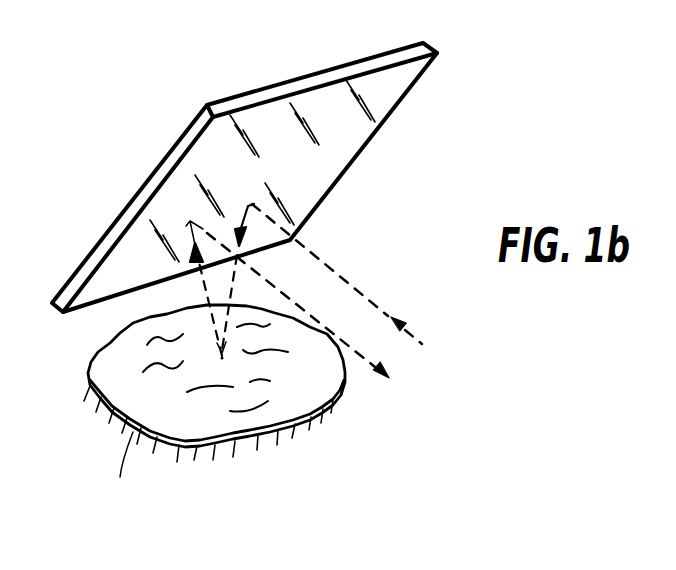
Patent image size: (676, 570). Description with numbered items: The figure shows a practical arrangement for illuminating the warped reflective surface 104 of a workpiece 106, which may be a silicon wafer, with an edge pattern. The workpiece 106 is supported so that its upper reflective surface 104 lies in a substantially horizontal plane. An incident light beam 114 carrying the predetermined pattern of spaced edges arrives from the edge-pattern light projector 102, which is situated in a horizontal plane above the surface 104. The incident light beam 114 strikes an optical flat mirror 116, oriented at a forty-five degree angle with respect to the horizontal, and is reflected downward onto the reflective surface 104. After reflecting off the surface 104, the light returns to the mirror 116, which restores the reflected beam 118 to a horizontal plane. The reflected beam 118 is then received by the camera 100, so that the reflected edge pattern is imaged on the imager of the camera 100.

The camera 100 is at (415, 379).
The edge-pattern light projector 102 is at (453, 338).
The reflective surface 104 is at (120, 353).
The workpiece 106 is at (342, 397).
The incident light beam 114 is at (342, 266).
The optical flat mirror 116 is at (398, 88).
The reflected beam 118 is at (337, 339).